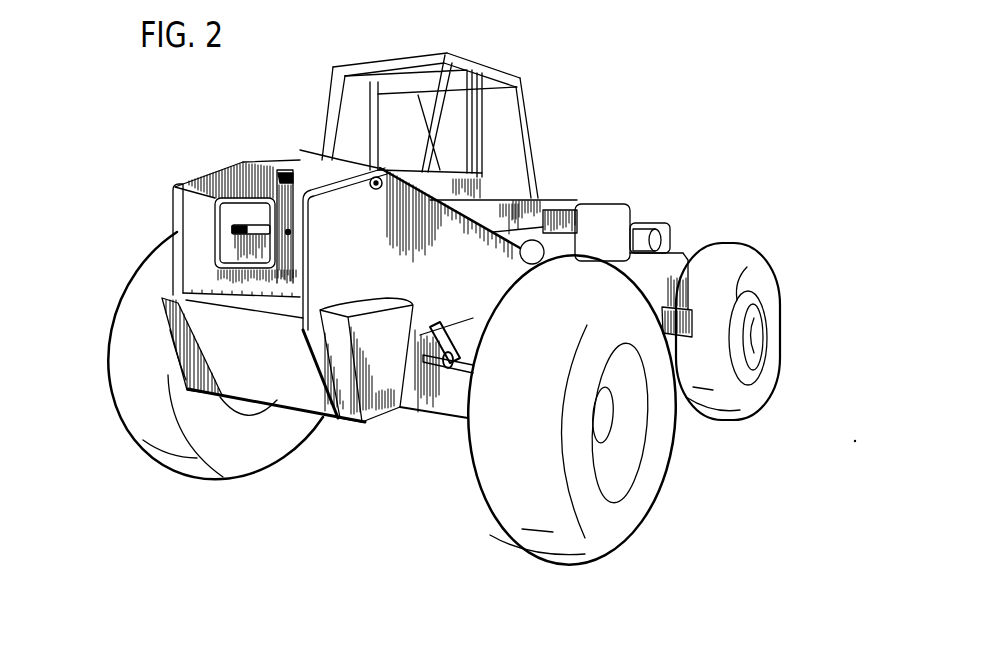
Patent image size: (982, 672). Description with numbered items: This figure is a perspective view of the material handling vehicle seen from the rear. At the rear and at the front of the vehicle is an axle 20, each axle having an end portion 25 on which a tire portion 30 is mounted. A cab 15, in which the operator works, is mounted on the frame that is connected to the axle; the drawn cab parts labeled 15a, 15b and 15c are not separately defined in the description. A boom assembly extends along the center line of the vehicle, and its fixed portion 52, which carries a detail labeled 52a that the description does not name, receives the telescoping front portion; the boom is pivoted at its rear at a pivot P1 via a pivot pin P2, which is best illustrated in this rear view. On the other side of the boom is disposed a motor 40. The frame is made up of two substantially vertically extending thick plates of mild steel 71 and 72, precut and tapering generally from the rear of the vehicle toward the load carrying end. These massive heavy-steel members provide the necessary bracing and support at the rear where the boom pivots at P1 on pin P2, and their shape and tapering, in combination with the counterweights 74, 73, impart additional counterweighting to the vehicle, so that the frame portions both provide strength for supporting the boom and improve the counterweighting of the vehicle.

The cab 15 is at (443, 50).
The front frame post 15a is at (536, 158).
The frame upright bars 15b is at (366, 110).
The frame roof bar 15c is at (388, 62).
The axle 20 is at (443, 390).
The end portion 25 is at (750, 327).
The tire portion 30 is at (640, 494).
The motor 40 is at (635, 258).
The fixed portion 52 is at (222, 252).
The control lever 52a is at (243, 223).
The vertically extending thick plate 71 is at (342, 262).
The vertically extending thick plate 72 is at (192, 262).
The counterweight 73 is at (178, 355).
The counterweight 74 is at (168, 377).
The pivot P1 is at (372, 177).
The pivot pin P2 is at (288, 176).